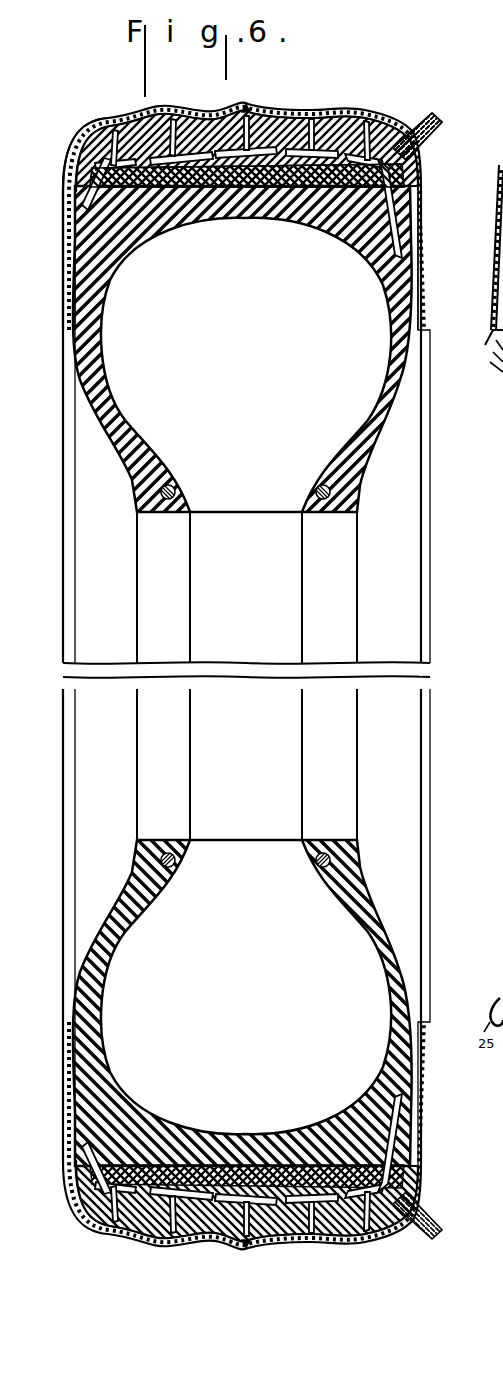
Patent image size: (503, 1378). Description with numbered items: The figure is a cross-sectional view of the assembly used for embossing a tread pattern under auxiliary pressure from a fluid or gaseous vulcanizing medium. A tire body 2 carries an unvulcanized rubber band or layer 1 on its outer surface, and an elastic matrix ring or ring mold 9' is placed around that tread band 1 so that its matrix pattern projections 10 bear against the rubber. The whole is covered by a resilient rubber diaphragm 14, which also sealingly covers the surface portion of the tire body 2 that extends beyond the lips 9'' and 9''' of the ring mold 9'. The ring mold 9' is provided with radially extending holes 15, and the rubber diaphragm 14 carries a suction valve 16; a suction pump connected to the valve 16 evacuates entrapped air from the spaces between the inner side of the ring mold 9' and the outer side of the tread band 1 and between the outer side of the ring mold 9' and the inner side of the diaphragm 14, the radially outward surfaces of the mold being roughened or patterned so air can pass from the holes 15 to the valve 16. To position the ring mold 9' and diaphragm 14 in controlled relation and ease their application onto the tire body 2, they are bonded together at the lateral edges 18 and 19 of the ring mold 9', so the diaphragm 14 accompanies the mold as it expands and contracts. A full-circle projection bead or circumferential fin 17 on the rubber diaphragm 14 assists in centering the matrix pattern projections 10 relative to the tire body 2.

The unvulcanized rubber band 1 is at (291, 185).
The tire body 2 is at (362, 387).
The ring mold 9' is at (252, 369).
The lip of the ring mold 9'' is at (52, 262).
The lip of the ring mold 9''' is at (442, 258).
The matrix pattern projections 10 is at (127, 126).
The rubber diaphragm 14 is at (424, 245).
The radially extending holes 15 is at (187, 120).
The suction valve 16 is at (427, 118).
The circumferential fin 17 is at (251, 110).
The lateral edge of the ring mold 18 is at (419, 172).
The lateral edge of the ring mold 19 is at (72, 162).